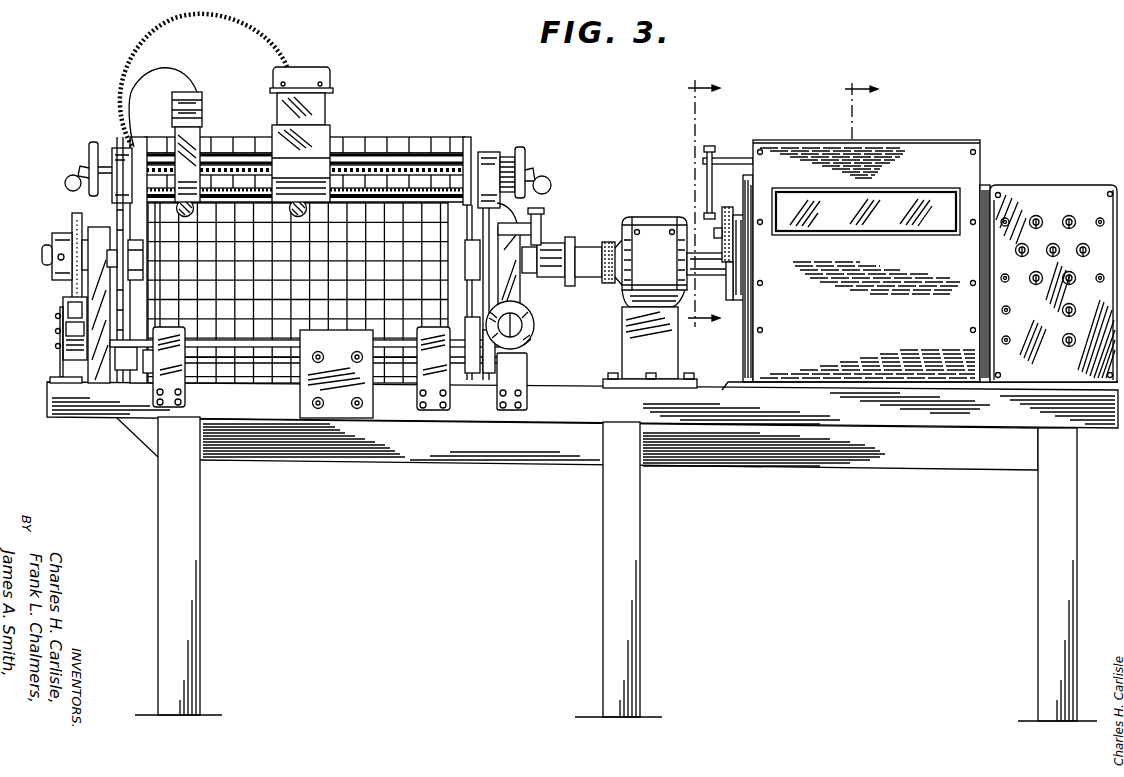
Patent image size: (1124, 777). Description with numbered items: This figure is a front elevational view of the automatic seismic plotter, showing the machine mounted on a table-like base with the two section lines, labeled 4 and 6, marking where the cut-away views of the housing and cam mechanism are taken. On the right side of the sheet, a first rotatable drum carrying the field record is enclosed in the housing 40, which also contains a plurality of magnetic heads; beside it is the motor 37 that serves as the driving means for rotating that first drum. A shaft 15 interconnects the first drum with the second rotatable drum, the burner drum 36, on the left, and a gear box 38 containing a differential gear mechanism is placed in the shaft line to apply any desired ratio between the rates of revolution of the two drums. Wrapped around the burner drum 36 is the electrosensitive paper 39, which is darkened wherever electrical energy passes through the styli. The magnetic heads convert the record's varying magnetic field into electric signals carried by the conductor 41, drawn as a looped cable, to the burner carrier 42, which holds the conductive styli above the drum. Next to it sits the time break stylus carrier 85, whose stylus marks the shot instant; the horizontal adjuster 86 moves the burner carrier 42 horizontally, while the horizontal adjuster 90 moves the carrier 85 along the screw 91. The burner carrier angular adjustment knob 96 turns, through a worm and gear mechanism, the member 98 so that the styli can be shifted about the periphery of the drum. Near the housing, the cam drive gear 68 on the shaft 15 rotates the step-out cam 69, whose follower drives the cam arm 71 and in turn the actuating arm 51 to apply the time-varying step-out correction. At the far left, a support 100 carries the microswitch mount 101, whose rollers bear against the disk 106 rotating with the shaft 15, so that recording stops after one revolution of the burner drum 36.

The shaft 15 is at (42, 258).
The burner drum 36 is at (340, 242).
The motor 37 is at (1040, 195).
The gear box 38 is at (647, 217).
The electrosensitive paper 39 is at (404, 140).
The housing 40 is at (928, 151).
The conductor 41 is at (283, 54).
The burner carrier 42 is at (318, 105).
The actuating arm 51 is at (728, 157).
The cam drive gear 68 is at (727, 290).
The step-out cam 69 is at (724, 207).
The cam arm 71 is at (705, 200).
The time break stylus carrier 85 is at (202, 118).
The horizontal adjuster 86 is at (540, 181).
The horizontal adjuster 90 is at (71, 178).
The screw 91 is at (357, 164).
The burner carrier angular adjustment knob 96 is at (535, 326).
The member 98 is at (264, 348).
The support 100 is at (48, 396).
The microswitch mount 101 is at (62, 350).
The disk 106 is at (72, 218).
The section line 4- 4 is at (869, 205).
The section line 6- 6 is at (712, 205).